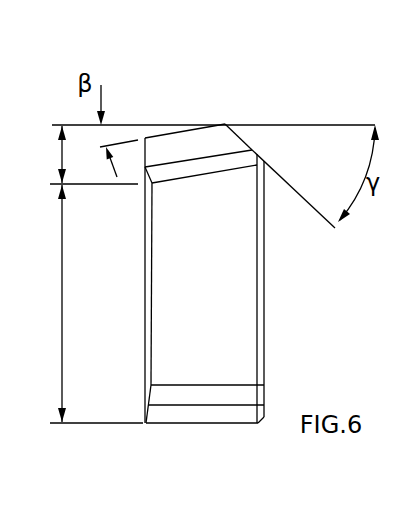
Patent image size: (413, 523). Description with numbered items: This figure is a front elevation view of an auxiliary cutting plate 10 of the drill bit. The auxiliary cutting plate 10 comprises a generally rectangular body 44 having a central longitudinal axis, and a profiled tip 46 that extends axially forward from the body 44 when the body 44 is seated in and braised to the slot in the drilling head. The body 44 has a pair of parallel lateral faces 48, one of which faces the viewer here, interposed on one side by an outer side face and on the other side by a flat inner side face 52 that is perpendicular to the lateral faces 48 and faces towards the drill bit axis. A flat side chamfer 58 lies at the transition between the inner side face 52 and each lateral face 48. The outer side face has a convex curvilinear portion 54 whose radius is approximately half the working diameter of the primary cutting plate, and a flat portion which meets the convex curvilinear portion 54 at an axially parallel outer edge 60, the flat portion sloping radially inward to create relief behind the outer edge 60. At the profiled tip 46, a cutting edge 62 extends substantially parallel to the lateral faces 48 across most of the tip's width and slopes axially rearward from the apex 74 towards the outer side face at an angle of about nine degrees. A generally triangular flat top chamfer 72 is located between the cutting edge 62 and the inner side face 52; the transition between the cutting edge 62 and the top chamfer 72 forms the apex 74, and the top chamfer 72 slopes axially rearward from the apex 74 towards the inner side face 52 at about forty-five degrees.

The auxiliary cutting plate 10 is at (242, 229).
The body 44 is at (45, 303).
The profiled tip 46 is at (44, 154).
The lateral faces 48 is at (193, 289).
The inner side face 52 is at (265, 292).
The convex curvilinear portion 54 is at (146, 307).
The flat side chamfer 58 is at (259, 244).
The outer edge 60 is at (148, 365).
The cutting edge 62 is at (182, 131).
The top chamfer 72 is at (243, 141).
The apex 74 is at (226, 125).